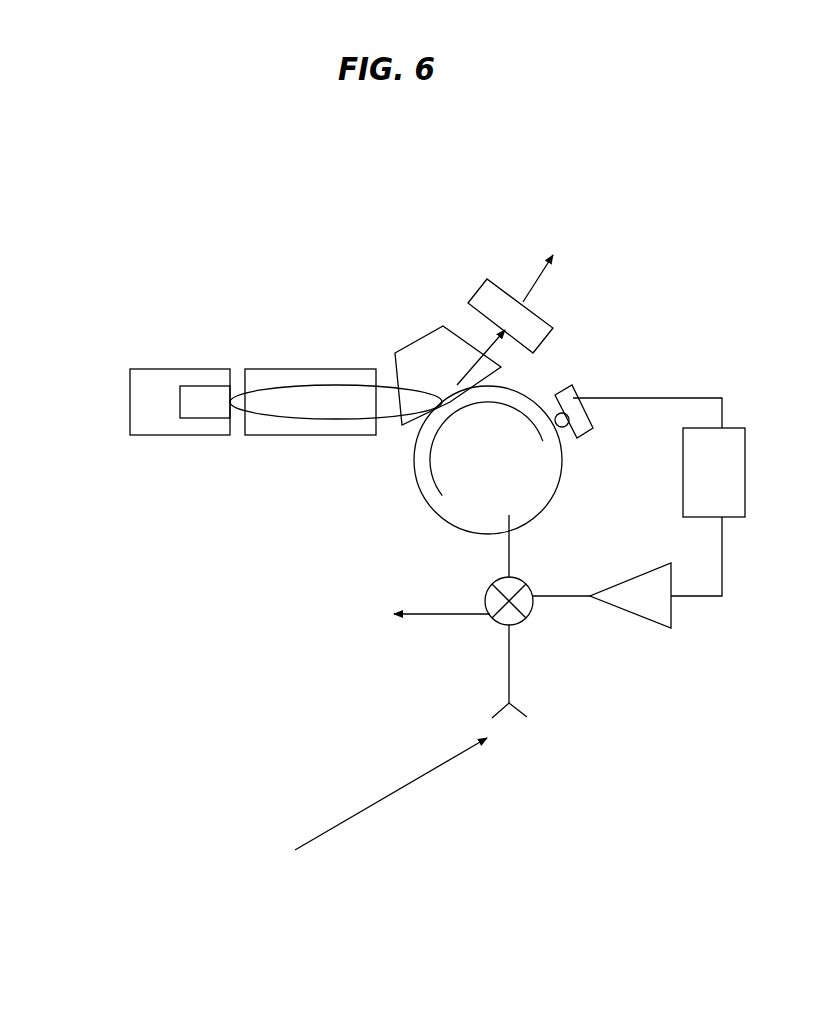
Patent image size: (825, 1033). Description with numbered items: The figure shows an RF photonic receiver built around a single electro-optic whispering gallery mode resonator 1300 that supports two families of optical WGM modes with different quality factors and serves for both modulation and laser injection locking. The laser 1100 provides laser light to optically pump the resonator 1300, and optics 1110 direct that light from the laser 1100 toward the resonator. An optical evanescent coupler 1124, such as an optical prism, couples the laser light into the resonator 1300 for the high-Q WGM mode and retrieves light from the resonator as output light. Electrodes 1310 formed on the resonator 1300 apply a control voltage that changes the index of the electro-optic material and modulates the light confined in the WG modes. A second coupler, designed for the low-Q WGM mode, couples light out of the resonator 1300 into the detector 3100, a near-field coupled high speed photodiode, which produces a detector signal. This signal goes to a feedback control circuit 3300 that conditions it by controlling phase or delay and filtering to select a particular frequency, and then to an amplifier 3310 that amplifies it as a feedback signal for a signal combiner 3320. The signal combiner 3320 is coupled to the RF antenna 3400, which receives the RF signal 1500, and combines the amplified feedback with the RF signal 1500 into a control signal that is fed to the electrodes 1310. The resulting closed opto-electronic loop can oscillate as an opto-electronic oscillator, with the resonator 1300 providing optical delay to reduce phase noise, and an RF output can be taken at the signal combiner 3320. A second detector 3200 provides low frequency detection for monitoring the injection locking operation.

The laser 1100 is at (180, 373).
The optics 1110 is at (336, 373).
The optical evanescent coupler 1124 is at (457, 369).
The electro-optic WGM resonator 1300 is at (510, 460).
The electrodes 1310 is at (539, 485).
The RF signal 1500 is at (268, 803).
The detector 3100 is at (675, 382).
The second detector 3200 is at (552, 274).
The feedback control circuit 3300 is at (745, 502).
The amplifier 3310 is at (660, 619).
The signal combiner 3320 is at (531, 609).
The RF antenna 3400 is at (548, 703).